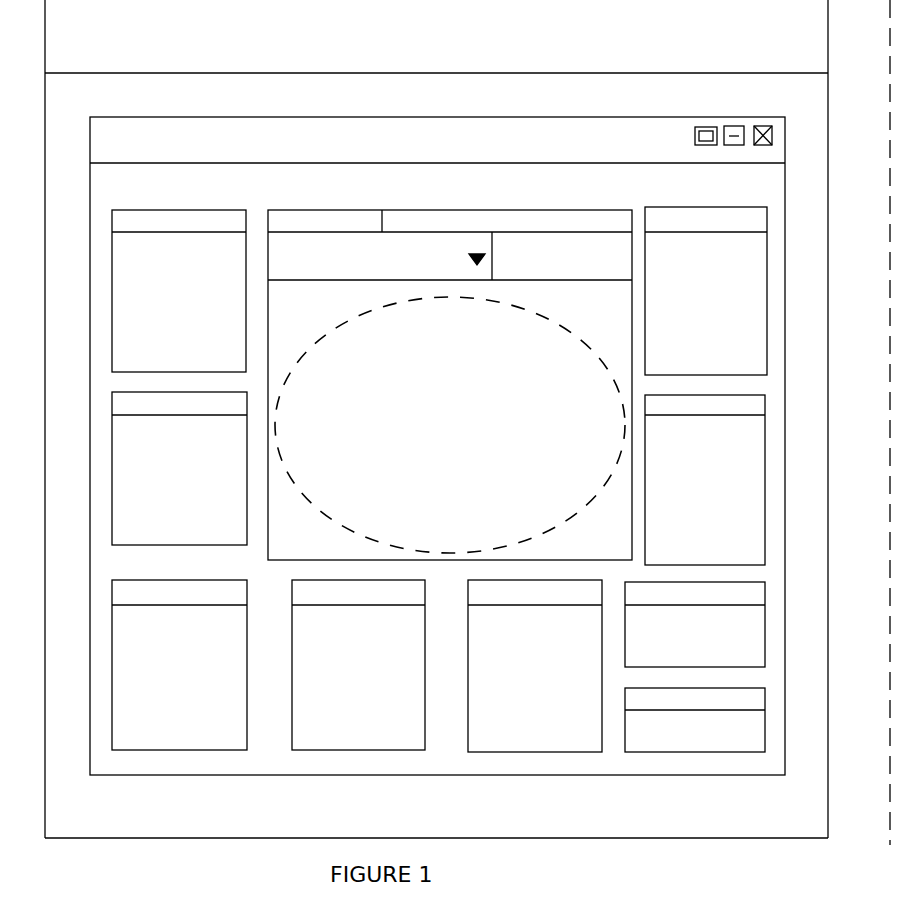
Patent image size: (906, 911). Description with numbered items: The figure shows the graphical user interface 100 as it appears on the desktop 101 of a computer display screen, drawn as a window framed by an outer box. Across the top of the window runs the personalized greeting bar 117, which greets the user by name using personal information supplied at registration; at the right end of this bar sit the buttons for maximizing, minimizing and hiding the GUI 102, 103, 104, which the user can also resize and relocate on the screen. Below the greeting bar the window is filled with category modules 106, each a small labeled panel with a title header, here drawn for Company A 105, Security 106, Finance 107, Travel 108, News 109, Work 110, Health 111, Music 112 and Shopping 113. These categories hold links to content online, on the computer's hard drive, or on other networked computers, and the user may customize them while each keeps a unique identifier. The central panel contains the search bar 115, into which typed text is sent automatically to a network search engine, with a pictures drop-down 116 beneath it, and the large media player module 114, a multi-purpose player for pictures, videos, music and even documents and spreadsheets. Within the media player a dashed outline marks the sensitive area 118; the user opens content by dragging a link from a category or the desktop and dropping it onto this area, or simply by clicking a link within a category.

The graphical user interface 100 is at (92, 776).
The desktop 101 is at (78, 73).
The close button 102 is at (823, 106).
The buttons for maximizing, minimizing and hiding the GUI 103 is at (768, 104).
The restore button 104 is at (698, 127).
The company A module 105 is at (190, 286).
The category module 106 is at (193, 479).
The finance module 107 is at (193, 684).
The travel module 108 is at (371, 682).
The news module 109 is at (545, 682).
The work module 110 is at (690, 737).
The health module 111 is at (705, 644).
The music module 112 is at (722, 492).
The shopping module 113 is at (719, 306).
The media player module 114 is at (539, 426).
The search bar 115 is at (366, 218).
The pictures drop-down menu 116 is at (406, 268).
The personalized greeting bar 117 is at (468, 136).
The sensitive area 118 is at (277, 440).